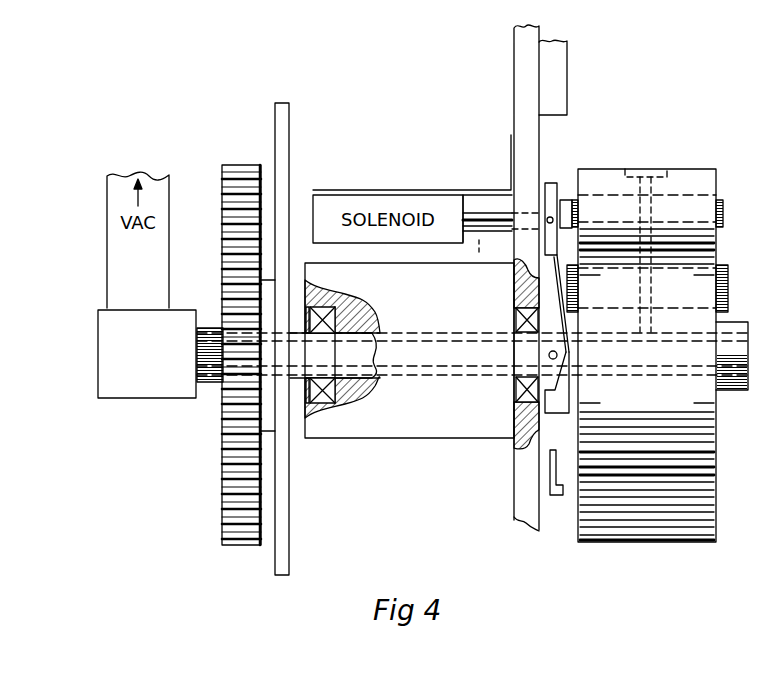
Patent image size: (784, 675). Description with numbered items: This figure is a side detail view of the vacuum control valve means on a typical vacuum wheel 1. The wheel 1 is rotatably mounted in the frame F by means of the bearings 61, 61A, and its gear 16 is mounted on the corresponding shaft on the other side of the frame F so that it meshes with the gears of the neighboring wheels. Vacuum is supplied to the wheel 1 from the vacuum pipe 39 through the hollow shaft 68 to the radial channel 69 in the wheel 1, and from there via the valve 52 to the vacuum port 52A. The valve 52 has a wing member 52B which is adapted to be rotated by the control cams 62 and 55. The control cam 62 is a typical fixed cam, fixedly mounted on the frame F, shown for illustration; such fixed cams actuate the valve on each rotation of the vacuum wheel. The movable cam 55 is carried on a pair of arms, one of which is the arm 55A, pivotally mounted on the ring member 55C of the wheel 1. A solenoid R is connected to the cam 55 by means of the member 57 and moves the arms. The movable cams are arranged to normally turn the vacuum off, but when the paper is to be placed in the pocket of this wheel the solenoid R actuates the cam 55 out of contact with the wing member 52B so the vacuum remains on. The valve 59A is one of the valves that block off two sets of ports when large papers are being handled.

The vacuum pipe 39 is at (108, 301).
The gear 16 is at (221, 497).
The frame F is at (290, 492).
The hollow shaft 68 is at (364, 340).
The bearing 61A is at (331, 404).
The bearing 61 is at (514, 396).
The arm 55A is at (524, 292).
The member 57 is at (501, 212).
The solenoid R is at (488, 247).
The movable cam 55 is at (556, 177).
The ring member 55C is at (569, 413).
The wing member 52B is at (566, 200).
The valve 52 is at (632, 193).
The vacuum port 52A is at (629, 169).
The radial channel 69 is at (655, 195).
The valve 59A is at (726, 297).
The vacuum wheel 1 is at (716, 461).
The fixed control cam 62 is at (550, 495).